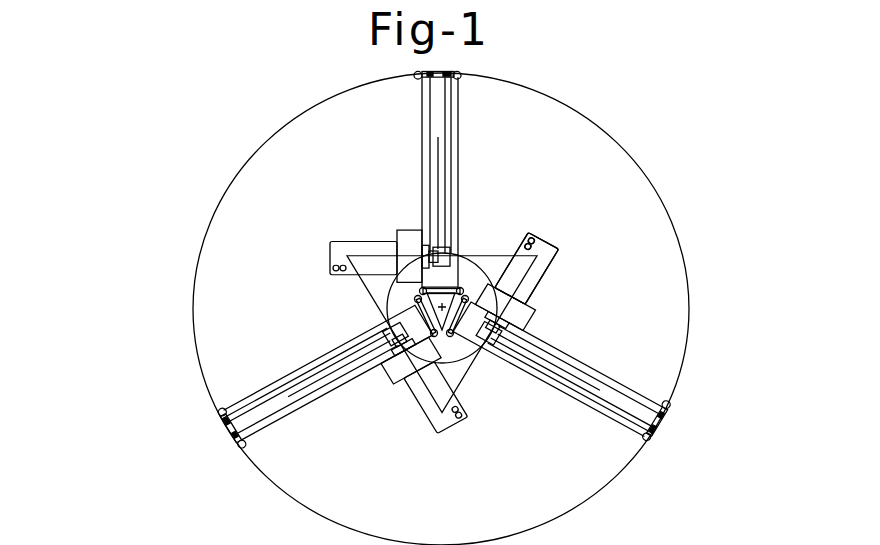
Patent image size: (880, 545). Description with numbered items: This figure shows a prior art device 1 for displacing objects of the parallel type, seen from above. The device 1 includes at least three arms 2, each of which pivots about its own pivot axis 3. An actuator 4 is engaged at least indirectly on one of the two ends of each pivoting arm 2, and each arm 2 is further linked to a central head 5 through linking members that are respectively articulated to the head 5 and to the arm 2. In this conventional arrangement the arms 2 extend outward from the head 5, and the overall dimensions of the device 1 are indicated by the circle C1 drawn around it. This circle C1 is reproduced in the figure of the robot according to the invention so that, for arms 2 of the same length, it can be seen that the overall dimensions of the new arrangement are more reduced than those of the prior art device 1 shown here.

The device 1 is at (146, 472).
The arms 2 is at (437, 125).
The pivot axis 3 is at (490, 253).
The actuator 4 is at (553, 250).
The head 5 is at (387, 293).
The circle C1 is at (689, 281).